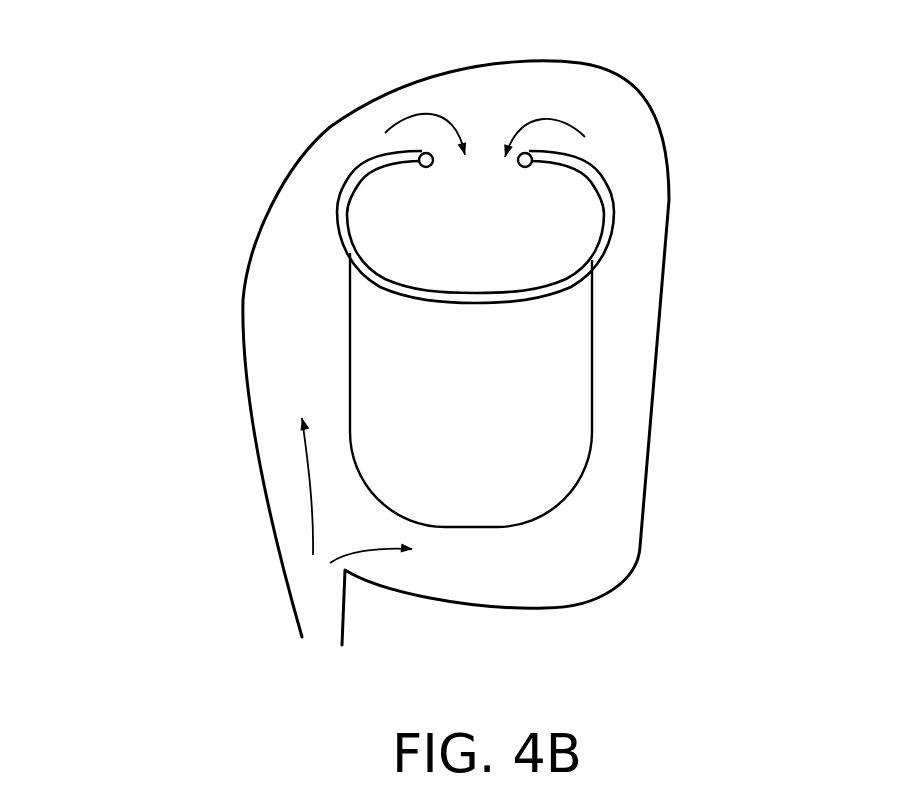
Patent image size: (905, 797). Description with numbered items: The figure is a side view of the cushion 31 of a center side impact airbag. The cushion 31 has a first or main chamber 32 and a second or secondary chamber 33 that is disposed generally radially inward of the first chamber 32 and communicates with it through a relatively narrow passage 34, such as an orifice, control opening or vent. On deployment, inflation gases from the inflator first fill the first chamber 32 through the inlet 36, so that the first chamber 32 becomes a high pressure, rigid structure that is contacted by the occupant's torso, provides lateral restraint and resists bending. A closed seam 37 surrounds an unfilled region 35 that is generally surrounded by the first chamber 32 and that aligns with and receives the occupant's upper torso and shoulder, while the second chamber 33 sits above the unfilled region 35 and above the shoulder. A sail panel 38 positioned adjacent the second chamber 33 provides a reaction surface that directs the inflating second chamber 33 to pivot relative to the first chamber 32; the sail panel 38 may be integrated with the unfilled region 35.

The cushion 31 is at (176, 152).
The first chamber 32 is at (287, 507).
The second chamber 33 is at (545, 223).
The passage 34 is at (480, 153).
The unfilled region 35 is at (562, 390).
The inlet 36 is at (315, 590).
The closed seam 37 is at (580, 478).
The sail panel 38 is at (590, 260).